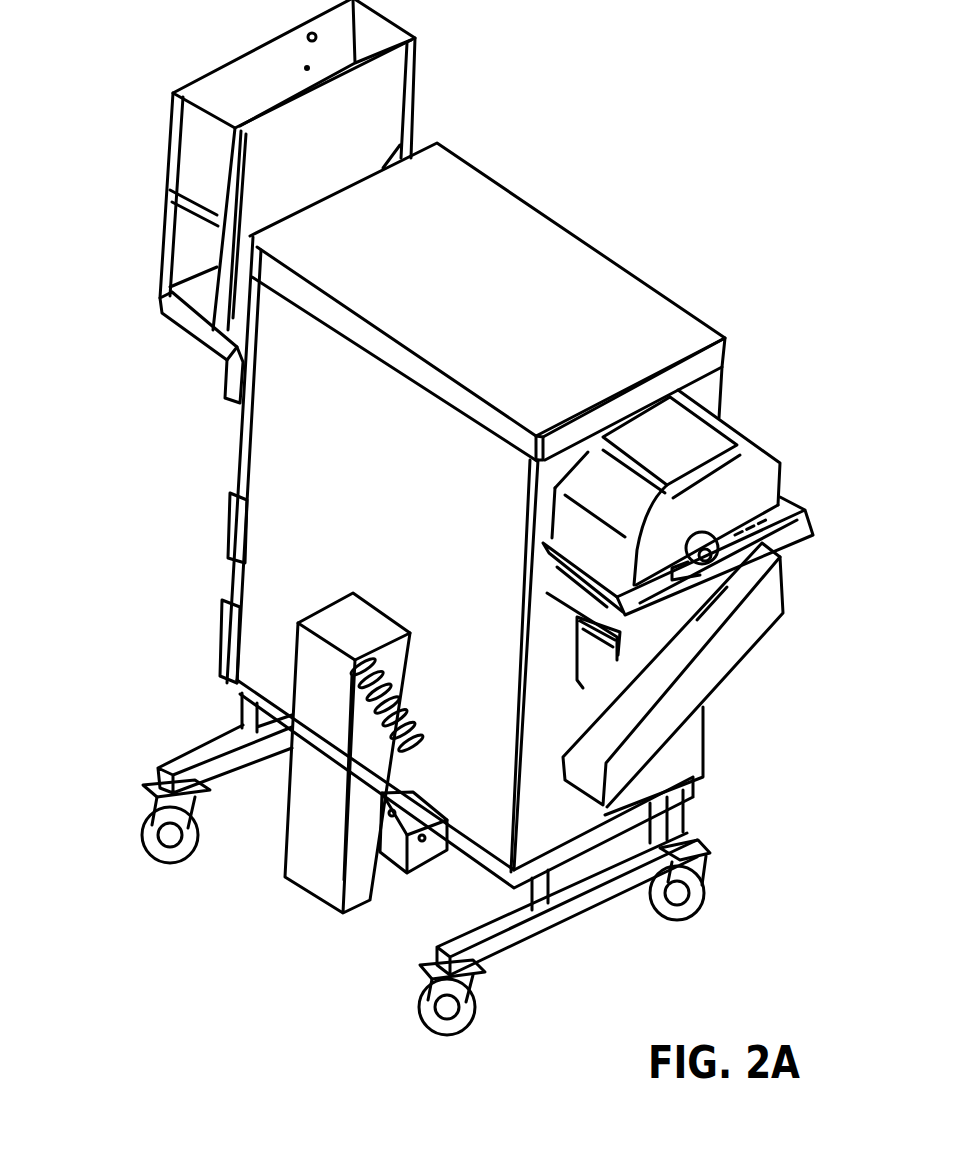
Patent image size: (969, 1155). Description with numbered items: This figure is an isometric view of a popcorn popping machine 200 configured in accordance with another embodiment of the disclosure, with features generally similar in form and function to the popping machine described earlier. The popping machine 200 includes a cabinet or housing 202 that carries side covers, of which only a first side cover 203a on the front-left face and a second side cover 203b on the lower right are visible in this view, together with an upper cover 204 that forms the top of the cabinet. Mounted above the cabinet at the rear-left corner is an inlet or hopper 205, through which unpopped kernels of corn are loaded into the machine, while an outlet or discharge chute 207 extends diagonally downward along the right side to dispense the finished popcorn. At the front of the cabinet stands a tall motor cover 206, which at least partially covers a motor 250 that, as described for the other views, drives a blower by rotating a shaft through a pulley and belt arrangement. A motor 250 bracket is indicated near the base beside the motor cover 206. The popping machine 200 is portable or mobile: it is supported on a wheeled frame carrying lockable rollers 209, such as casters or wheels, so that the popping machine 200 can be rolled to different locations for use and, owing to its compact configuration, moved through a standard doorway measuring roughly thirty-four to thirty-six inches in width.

The popping machine 200 is at (582, 120).
The cabinet or housing 202 is at (290, 500).
The first side cover 203a is at (323, 437).
The second side cover 203b is at (670, 757).
The upper cover 204 is at (603, 290).
The inlet or hopper 205 is at (253, 88).
The motor cover 206 is at (323, 877).
The outlet or discharge chute 207 is at (680, 615).
The lockable rollers 209 is at (200, 837).
The motor 250 is at (390, 853).